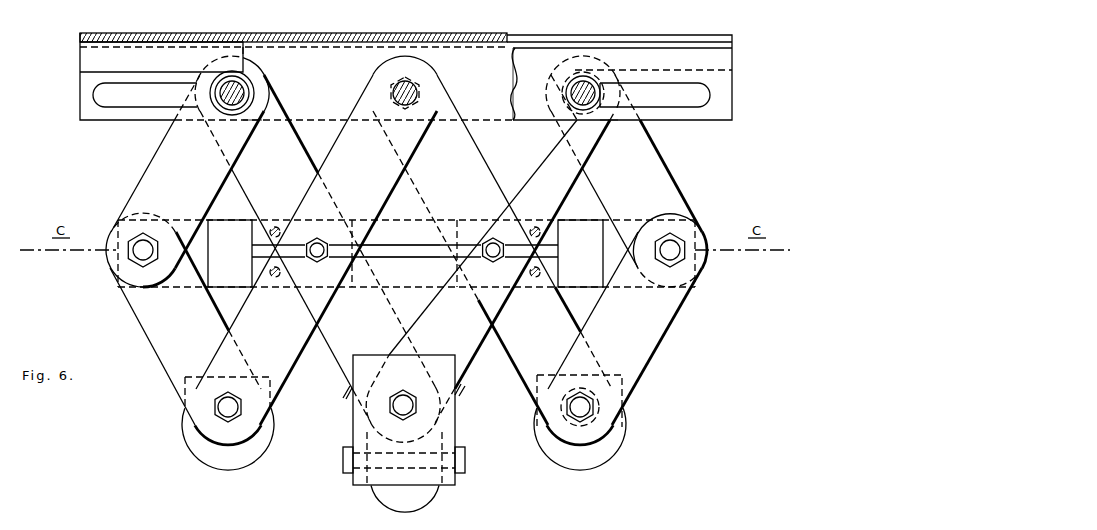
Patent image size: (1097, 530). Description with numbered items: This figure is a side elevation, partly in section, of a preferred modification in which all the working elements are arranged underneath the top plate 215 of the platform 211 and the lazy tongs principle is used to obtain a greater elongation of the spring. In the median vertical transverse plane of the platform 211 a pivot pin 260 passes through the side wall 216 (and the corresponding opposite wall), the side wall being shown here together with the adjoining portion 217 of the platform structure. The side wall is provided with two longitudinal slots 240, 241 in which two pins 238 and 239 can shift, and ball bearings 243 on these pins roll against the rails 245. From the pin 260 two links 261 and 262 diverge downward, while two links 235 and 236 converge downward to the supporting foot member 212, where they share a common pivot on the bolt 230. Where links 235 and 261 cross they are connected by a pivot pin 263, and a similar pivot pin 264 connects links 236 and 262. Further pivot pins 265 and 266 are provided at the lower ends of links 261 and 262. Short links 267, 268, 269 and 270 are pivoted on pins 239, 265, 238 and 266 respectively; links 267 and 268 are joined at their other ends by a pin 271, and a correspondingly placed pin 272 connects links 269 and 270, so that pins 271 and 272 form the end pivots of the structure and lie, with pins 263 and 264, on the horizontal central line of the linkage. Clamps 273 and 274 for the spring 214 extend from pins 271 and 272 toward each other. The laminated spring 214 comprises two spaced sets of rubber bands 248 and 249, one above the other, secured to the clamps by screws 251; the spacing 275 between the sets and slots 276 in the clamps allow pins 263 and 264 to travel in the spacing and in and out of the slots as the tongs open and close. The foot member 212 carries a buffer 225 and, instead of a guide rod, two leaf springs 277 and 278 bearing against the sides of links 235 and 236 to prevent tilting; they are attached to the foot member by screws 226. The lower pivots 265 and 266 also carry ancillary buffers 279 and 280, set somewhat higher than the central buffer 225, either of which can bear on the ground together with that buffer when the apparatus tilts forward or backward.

The platform 211 is at (634, 33).
The foot member 212 is at (464, 423).
The laminated spring 214 is at (420, 293).
The top plate 215 is at (487, 37).
The side wall 216 is at (333, 81).
The rail channel section 217 is at (538, 60).
The buffer 225 is at (385, 496).
The screws 226 is at (440, 484).
The bolt 230 is at (398, 410).
The link 235 is at (308, 152).
The link 236 is at (552, 180).
The pin 238 is at (580, 105).
The pin 239 is at (228, 102).
The longitudinal slot 240 is at (697, 104).
The longitudinal slot 241 is at (122, 100).
The ball bearings 243 is at (248, 122).
The rails 245 is at (90, 57).
The set of rubber bands 248 is at (396, 232).
The set of rubber bands 249 is at (393, 287).
The screws 251 is at (276, 226).
The pivot pin 260 is at (416, 88).
The link 261 is at (377, 181).
The link 262 is at (460, 173).
The pivot pin 263 is at (316, 262).
The pivot pin 264 is at (491, 260).
The pivot pin 265 is at (221, 410).
The pivot pin 266 is at (592, 408).
The short link 267 is at (141, 178).
The short link 268 is at (150, 316).
The short link 269 is at (650, 186).
The short link 270 is at (662, 322).
The pin 271 is at (140, 254).
The pin 272 is at (674, 253).
The clamp 273 is at (238, 255).
The clamp 274 is at (593, 255).
The spacing 275 is at (412, 252).
The slots 276 is at (263, 263).
The leaf spring 277 is at (348, 400).
The leaf spring 278 is at (460, 392).
The ancillary buffer 279 is at (244, 462).
The ancillary buffer 280 is at (584, 462).